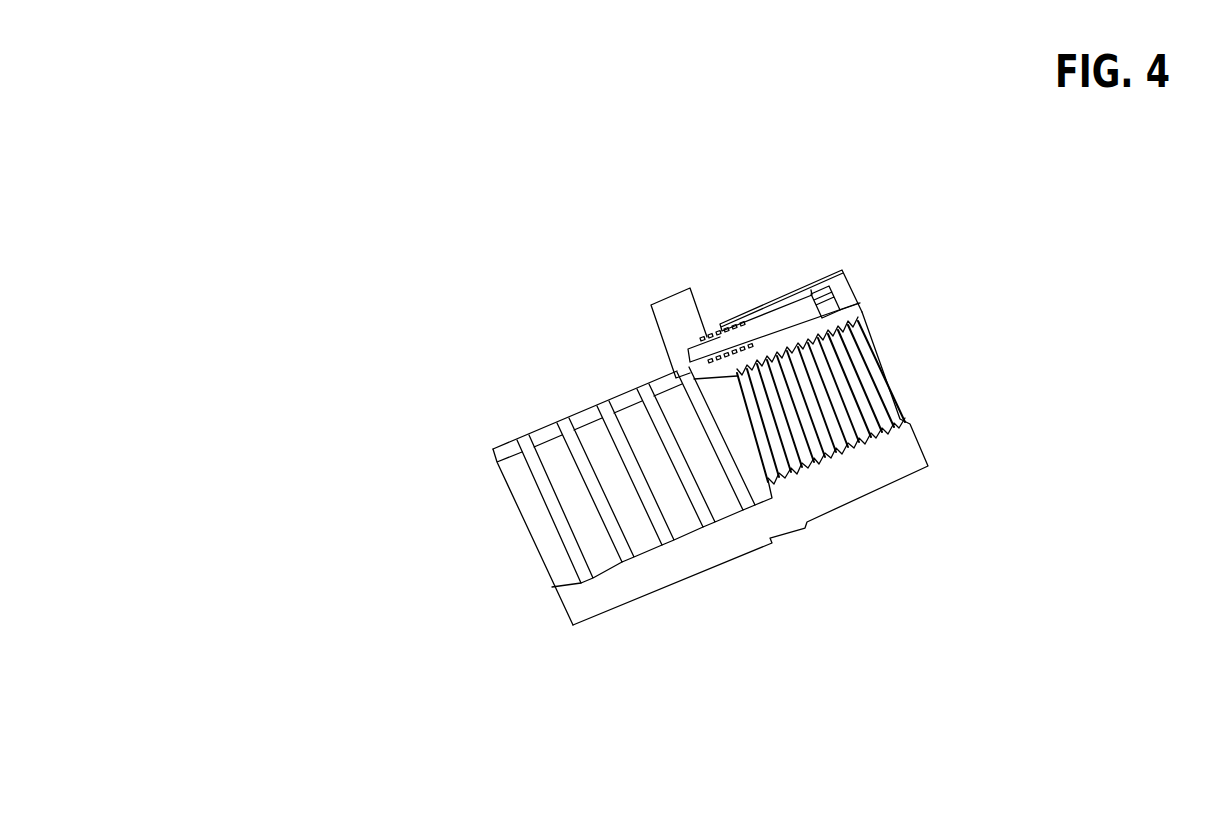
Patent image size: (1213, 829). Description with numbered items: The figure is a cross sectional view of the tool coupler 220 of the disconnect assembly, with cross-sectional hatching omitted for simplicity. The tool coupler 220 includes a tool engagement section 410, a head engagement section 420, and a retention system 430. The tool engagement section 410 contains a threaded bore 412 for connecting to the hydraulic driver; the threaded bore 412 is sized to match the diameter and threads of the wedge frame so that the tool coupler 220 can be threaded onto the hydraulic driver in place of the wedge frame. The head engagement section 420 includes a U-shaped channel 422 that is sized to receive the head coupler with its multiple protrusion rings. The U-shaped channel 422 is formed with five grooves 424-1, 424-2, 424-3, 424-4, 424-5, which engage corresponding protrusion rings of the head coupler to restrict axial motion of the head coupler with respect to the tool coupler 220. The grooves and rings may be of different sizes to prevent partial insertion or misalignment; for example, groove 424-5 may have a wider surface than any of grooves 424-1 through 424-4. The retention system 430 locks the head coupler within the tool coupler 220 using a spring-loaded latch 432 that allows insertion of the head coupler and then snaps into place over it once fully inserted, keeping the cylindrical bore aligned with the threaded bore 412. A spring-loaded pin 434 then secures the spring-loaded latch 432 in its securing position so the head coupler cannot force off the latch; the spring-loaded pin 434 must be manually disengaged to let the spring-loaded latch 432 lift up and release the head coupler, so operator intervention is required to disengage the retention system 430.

The tool coupler 220 is at (300, 210).
The tool engagement section 410 is at (869, 516).
The threaded bore 412 is at (908, 408).
The head engagement section 420 is at (532, 370).
The U-shaped channel 422 is at (534, 571).
The groove 424-1 is at (581, 584).
The groove 424-2 is at (621, 565).
The groove 424-3 is at (661, 548).
The groove 424-4 is at (702, 530).
The groove 424-5 is at (743, 513).
The retention system 430 is at (716, 293).
The spring-loaded latch 432 is at (673, 304).
The spring-loaded pin 434 is at (771, 324).